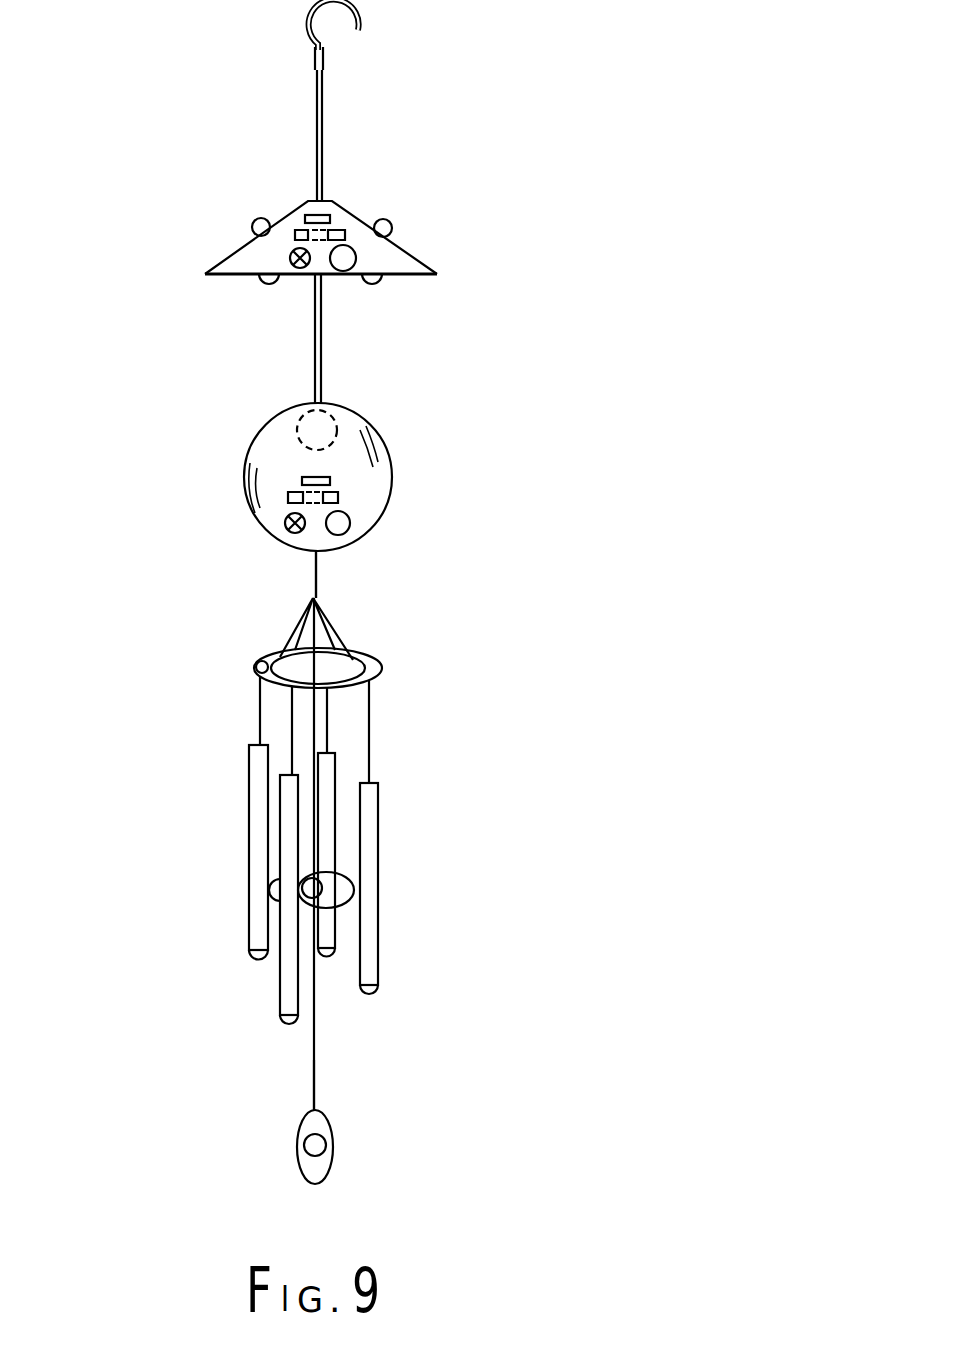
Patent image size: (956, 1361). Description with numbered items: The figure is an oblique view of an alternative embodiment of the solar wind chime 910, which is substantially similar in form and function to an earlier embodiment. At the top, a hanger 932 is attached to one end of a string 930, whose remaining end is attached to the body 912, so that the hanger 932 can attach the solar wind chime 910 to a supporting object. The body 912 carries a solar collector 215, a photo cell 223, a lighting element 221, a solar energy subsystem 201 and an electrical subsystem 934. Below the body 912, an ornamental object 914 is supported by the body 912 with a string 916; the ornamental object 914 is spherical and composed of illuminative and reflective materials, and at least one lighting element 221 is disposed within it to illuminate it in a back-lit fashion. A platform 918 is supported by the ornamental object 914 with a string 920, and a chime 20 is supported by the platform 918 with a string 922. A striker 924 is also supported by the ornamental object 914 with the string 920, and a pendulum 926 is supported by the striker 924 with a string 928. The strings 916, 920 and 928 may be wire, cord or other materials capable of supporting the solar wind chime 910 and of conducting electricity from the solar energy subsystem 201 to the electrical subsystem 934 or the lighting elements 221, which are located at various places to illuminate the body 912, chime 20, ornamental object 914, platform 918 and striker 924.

The solar wind chime 910 is at (663, 342).
The hanger 932 is at (360, 28).
The string 930 is at (325, 140).
The body 912 is at (400, 258).
The solar collector 215 is at (330, 213).
The solar energy subsystem 201 is at (297, 228).
The photo cell 223 is at (301, 270).
The electrical subsystem 934 is at (343, 272).
The lighting element 221 is at (258, 218).
The string 916 is at (322, 376).
The ornamental object 914 is at (392, 478).
The string 920 is at (318, 575).
The platform 918 is at (373, 678).
The string 922 is at (290, 710).
The chime 20 is at (248, 806).
The striker 924 is at (354, 888).
The pendulum 926 is at (332, 1128).
The string 928 is at (312, 1083).